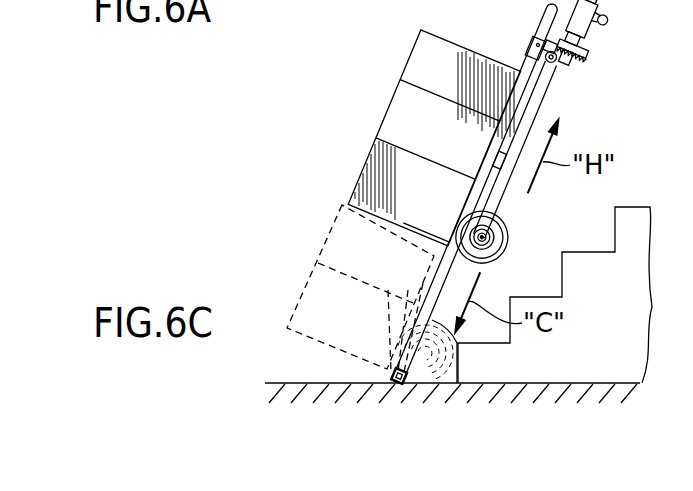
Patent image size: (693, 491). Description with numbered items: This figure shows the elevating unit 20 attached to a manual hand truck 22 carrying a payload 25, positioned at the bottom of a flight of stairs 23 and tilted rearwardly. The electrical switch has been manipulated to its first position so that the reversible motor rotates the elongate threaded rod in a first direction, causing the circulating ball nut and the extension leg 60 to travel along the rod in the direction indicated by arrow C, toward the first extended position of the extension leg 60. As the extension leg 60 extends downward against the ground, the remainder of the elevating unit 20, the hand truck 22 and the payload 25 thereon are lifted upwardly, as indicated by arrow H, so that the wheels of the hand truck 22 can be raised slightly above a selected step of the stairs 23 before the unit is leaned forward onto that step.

The elevating unit 20 is at (603, 62).
The manual hand truck 22 is at (510, 33).
The stairs 23 is at (605, 284).
The payload 25 is at (443, 64).
The extension leg 60 is at (458, 352).